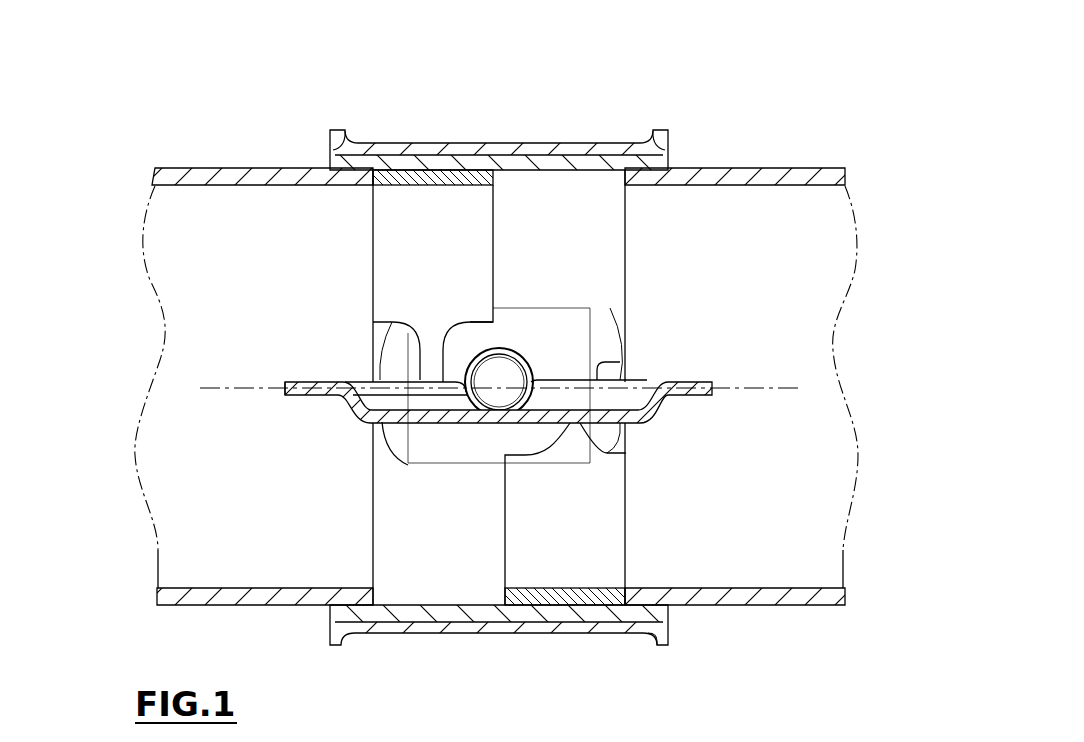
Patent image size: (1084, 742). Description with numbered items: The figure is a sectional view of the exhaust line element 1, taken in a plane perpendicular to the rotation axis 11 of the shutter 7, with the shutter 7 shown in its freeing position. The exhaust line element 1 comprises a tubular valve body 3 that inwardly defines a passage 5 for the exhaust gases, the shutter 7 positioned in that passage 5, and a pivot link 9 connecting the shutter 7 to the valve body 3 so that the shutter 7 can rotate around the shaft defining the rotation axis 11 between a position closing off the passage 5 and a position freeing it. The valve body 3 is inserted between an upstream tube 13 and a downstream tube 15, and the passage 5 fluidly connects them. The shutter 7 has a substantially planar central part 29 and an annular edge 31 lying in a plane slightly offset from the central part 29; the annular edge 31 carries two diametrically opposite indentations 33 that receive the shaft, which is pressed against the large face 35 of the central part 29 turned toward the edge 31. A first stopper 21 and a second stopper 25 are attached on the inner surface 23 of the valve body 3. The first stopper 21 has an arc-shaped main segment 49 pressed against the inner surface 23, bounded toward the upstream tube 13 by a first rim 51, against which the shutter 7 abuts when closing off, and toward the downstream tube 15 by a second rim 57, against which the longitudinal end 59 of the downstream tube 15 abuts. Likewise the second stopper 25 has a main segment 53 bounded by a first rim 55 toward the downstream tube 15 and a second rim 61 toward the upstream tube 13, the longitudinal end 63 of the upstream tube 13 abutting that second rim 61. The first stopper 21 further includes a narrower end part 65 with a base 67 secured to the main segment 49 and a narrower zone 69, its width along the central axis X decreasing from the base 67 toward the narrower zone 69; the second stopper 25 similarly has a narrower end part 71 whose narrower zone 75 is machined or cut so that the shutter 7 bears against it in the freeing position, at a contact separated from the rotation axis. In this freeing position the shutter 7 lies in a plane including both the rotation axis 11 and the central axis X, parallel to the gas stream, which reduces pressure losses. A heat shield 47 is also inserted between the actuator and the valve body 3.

The exhaust line element 1 is at (162, 130).
The tubular valve body 3 is at (432, 634).
The passage 5 is at (527, 178).
The shutter 7 is at (285, 369).
The pivot link 9 is at (551, 333).
The rotation axis 11 is at (492, 393).
The upstream tube 13 is at (762, 170).
The downstream tube 15 is at (212, 168).
The first stopper 21 is at (453, 230).
The inner surface 23 is at (597, 186).
The second stopper 25 is at (600, 546).
The central part 29 is at (428, 422).
The annular edge 31 is at (305, 395).
The indentations 33 is at (543, 400).
The large face 35 is at (612, 362).
The heat shield 47 is at (575, 633).
The main segment 49 is at (398, 207).
The first rim 51 is at (493, 270).
The main segment 53 is at (605, 574).
The first rim 55 is at (505, 572).
The second rim 57 is at (373, 241).
The longitudinal end 59 is at (365, 152).
The second rim 61 is at (625, 515).
The longitudinal end 63 is at (657, 632).
The narrower end part 65 is at (421, 338).
The base 67 is at (435, 327).
The narrower zone 69 is at (428, 368).
The narrower end part 71 is at (556, 455).
The narrower zone 75 is at (570, 437).
The central axis X is at (765, 388).